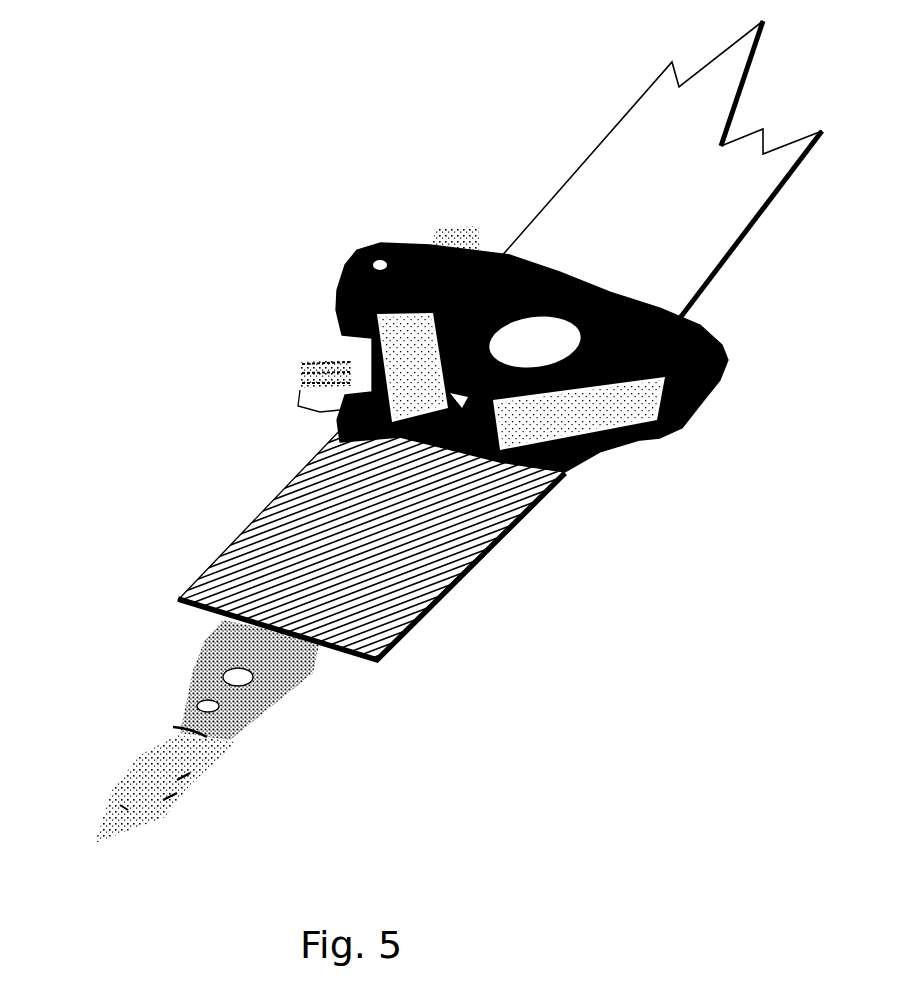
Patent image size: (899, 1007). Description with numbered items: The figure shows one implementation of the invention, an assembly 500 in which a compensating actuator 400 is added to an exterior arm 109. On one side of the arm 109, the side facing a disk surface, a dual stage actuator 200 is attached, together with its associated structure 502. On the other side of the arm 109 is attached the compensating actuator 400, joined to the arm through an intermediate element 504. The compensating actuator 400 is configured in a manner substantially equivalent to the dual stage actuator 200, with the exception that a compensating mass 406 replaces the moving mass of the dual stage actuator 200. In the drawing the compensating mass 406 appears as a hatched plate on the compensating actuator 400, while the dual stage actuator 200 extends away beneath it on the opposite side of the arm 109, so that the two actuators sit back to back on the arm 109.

The electrical connector assembly 500 is at (134, 96).
The exterior arm 109 is at (570, 172).
The adhesive layer 504 is at (455, 240).
The compensating actuator 400 is at (728, 357).
The compensating mass 406 is at (477, 510).
The flexible circuit strip 502 is at (193, 672).
The dual stage actuator 200 is at (286, 726).